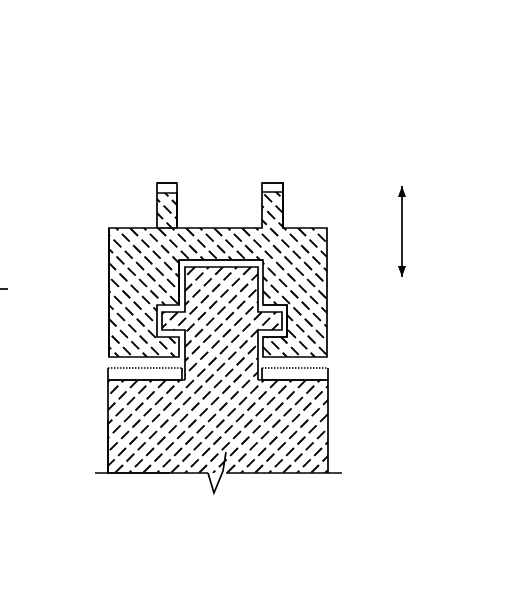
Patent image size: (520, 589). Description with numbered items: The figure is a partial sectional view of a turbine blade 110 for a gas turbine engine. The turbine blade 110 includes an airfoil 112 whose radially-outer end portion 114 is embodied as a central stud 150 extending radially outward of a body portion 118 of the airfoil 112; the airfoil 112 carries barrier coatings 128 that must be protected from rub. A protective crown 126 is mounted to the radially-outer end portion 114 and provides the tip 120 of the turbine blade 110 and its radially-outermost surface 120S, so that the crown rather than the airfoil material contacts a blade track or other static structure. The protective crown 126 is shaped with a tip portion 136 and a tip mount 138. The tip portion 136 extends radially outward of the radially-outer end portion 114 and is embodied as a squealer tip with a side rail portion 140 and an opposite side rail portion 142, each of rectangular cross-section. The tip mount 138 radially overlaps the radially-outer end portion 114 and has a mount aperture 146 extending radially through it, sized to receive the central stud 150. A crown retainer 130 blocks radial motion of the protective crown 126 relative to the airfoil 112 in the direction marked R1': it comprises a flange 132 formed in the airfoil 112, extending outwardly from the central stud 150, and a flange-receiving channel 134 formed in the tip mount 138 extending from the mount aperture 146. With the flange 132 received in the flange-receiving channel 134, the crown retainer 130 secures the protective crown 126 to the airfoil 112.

The turbine blade 110 is at (82, 112).
The tip 120 is at (132, 226).
The radially-outermost surface 120S is at (164, 183).
The tip portion 136 is at (178, 217).
The side rail portion 142 is at (282, 213).
The mount aperture 146 is at (228, 260).
The side rail portion 140 is at (168, 228).
The protective crown 126 is at (140, 280).
The tip mount 138 is at (170, 290).
The crown retainer 130 is at (405, 287).
The flange 132 is at (268, 317).
The flange-receiving channel 134 is at (287, 322).
The barrier coatings 128 is at (293, 376).
The radially-outer end portion 114 is at (198, 365).
The body portion 118 is at (288, 457).
The airfoil 112 is at (143, 440).
The central stud 150 is at (216, 332).
The height R1' is at (437, 231).